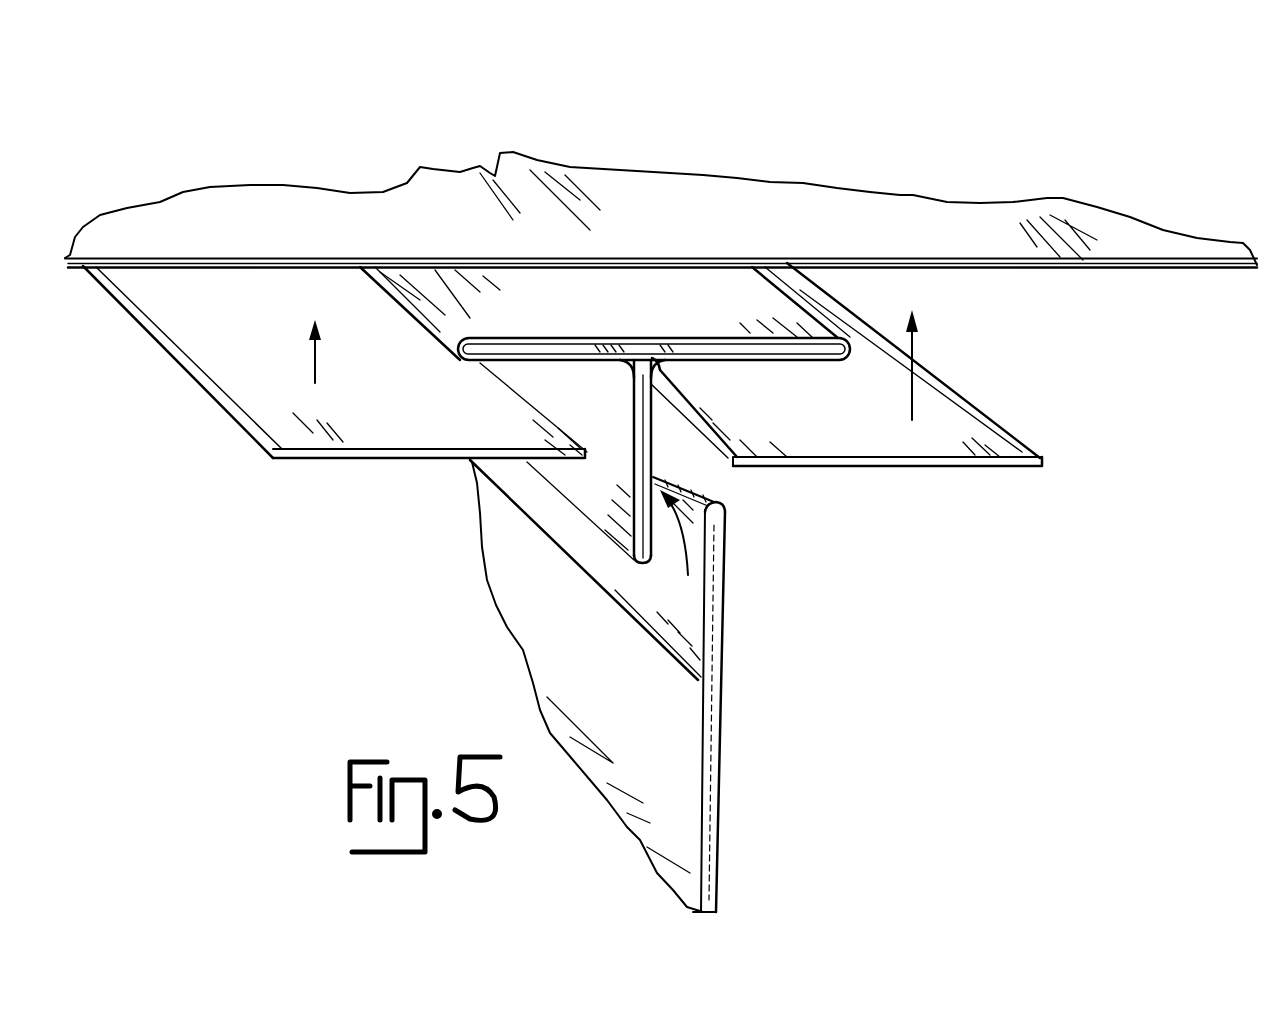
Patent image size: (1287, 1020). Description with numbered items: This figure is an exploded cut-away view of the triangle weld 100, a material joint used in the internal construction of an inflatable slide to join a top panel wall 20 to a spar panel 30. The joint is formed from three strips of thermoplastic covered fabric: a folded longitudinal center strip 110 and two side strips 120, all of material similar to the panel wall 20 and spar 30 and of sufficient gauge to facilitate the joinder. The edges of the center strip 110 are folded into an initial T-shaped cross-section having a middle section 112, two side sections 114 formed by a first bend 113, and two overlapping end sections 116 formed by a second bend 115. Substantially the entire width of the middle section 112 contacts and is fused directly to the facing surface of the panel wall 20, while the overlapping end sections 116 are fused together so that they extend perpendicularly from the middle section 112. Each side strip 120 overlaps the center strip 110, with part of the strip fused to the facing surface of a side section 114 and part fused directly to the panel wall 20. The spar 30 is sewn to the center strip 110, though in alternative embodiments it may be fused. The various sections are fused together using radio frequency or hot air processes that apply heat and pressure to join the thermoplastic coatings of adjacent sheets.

The top panel wall 20 is at (270, 212).
The spar panel 30 is at (735, 720).
The triangle weld 100 is at (603, 472).
The center strip 110 is at (654, 331).
The middle section 112 is at (633, 295).
The first bend 113 is at (438, 328).
The side section 114 is at (470, 458).
The second bend 115 is at (627, 363).
The end section 116 is at (607, 492).
The side strip 120 is at (603, 587).